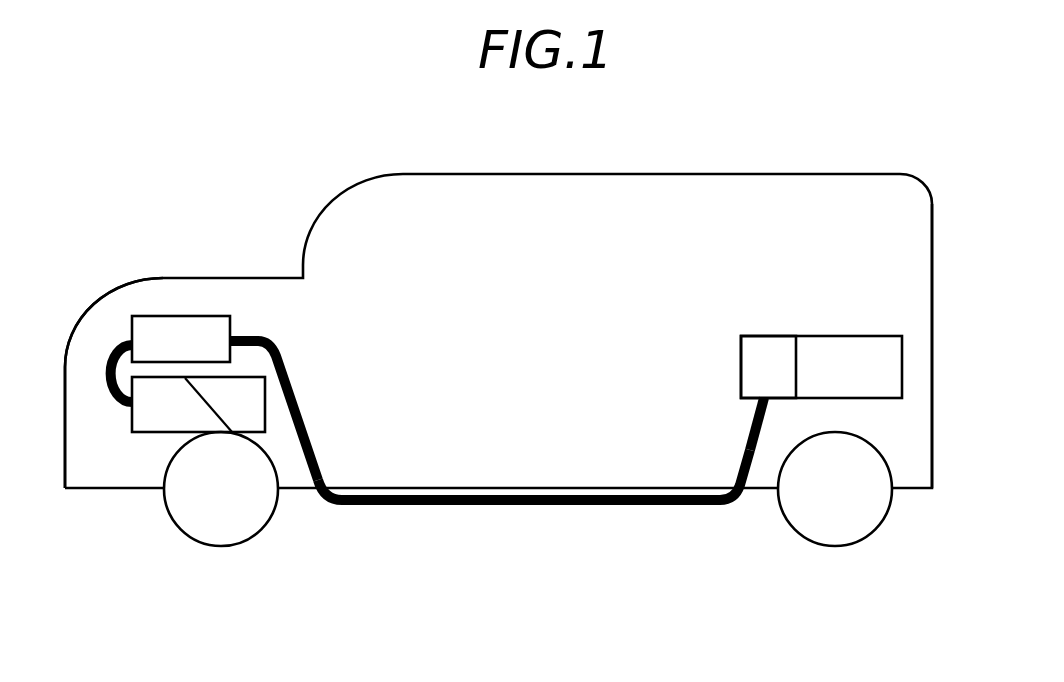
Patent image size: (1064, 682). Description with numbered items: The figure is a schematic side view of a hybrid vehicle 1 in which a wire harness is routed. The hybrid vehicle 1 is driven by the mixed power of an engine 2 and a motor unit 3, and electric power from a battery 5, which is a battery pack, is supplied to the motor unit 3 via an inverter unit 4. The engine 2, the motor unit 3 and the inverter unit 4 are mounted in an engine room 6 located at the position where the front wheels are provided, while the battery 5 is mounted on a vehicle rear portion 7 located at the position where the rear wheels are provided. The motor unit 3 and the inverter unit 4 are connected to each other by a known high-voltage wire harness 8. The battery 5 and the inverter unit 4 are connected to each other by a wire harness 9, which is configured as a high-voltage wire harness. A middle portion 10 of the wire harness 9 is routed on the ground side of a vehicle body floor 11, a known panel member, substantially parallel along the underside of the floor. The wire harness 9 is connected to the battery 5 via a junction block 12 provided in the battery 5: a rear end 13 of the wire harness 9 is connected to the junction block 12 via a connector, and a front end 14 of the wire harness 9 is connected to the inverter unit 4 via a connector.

The hybrid vehicle 1 is at (256, 133).
The engine 2 is at (250, 413).
The motor unit 3 is at (155, 410).
The inverter unit 4 is at (180, 330).
The battery 5 is at (873, 360).
The engine room 6 is at (103, 472).
The vehicle rear portion 7 is at (907, 428).
The high-voltage wire harness 8 is at (113, 343).
The wire harness 9 is at (535, 508).
The middle portion 10 is at (378, 507).
The vehicle body floor 11 is at (678, 487).
The junction block 12 is at (763, 350).
The rear end 13 is at (752, 420).
The front end 14 is at (247, 337).